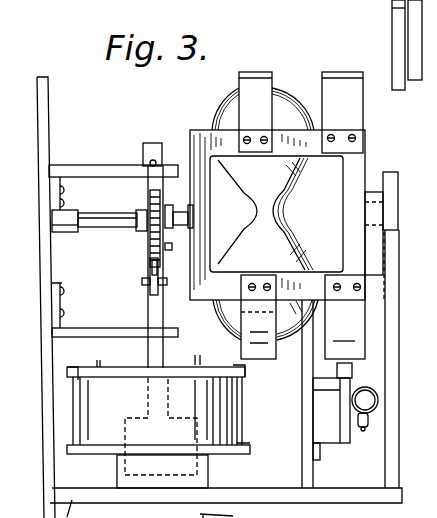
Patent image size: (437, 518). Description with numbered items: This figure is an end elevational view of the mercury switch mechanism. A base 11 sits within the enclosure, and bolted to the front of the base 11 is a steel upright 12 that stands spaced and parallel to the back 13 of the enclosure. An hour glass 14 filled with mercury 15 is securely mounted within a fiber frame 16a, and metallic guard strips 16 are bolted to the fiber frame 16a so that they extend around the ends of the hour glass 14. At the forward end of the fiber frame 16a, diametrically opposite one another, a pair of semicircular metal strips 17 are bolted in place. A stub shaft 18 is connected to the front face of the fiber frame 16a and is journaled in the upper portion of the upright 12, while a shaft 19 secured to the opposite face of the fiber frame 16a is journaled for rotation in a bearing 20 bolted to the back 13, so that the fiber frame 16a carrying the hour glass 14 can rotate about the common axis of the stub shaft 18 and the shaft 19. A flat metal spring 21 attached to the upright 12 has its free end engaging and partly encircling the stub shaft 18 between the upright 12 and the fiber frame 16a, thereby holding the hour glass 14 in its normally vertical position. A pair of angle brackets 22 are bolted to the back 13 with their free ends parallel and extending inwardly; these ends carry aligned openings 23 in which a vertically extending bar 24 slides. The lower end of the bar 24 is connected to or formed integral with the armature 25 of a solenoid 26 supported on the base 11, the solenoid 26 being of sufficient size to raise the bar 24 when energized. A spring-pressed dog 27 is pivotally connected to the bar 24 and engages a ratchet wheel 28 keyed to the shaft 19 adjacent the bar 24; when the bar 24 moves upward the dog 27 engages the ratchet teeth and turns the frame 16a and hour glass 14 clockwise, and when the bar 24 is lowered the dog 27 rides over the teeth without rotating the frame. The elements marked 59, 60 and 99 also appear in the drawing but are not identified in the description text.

The base 11 is at (357, 487).
The upright 12 is at (392, 342).
The back 13 is at (50, 105).
The hour glass 14 is at (282, 100).
The mercury 15 is at (305, 270).
The metallic guard strips 16 is at (252, 72).
The fiber frame 16a is at (358, 163).
The semicircular metal strips 17 is at (335, 72).
The stub shaft 18 is at (397, 210).
The shaft 19 is at (90, 228).
The bearing 20 is at (76, 212).
The flat metal spring 21 is at (377, 253).
The angle brackets 22 is at (70, 165).
The aligned openings 23 is at (165, 160).
The bar 24 is at (154, 307).
The armature 25 is at (197, 467).
The solenoid 26 is at (158, 415).
The spring-pressed dog 27 is at (160, 266).
The ratchet wheel 28 is at (140, 213).
The roller 59 is at (378, 403).
The pendant 60 is at (352, 438).
The rack teeth 99 is at (143, 257).